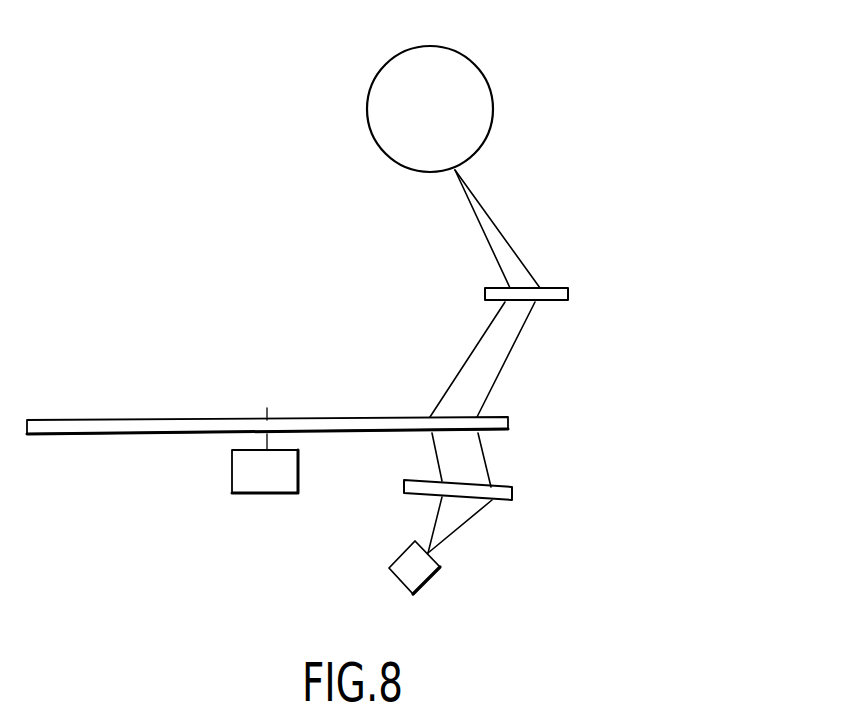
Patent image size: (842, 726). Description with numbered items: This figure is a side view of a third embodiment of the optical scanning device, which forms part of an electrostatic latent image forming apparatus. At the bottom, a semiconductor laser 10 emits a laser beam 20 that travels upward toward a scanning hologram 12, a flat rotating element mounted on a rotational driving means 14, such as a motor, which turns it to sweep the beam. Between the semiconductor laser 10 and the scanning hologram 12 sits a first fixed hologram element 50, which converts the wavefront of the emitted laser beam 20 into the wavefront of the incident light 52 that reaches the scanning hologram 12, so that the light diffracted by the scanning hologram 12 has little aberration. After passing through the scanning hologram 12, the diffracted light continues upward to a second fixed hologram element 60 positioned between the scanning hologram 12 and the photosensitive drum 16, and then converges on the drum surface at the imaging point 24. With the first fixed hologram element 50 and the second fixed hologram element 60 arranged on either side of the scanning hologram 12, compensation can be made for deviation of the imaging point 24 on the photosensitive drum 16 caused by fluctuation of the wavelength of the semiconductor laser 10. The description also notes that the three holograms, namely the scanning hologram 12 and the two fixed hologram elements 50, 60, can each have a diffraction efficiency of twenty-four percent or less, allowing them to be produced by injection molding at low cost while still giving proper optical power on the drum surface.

The photosensitive drum 16 is at (371, 104).
The imaging point 24 is at (454, 171).
The second fixed hologram element 60 is at (485, 293).
The scanning hologram 12 is at (508, 417).
The rotational driving means 14 is at (243, 472).
The incident light 52 is at (468, 457).
The first fixed hologram element 50 is at (513, 492).
The laser beam 20 is at (455, 517).
The semiconductor laser 10 is at (408, 580).